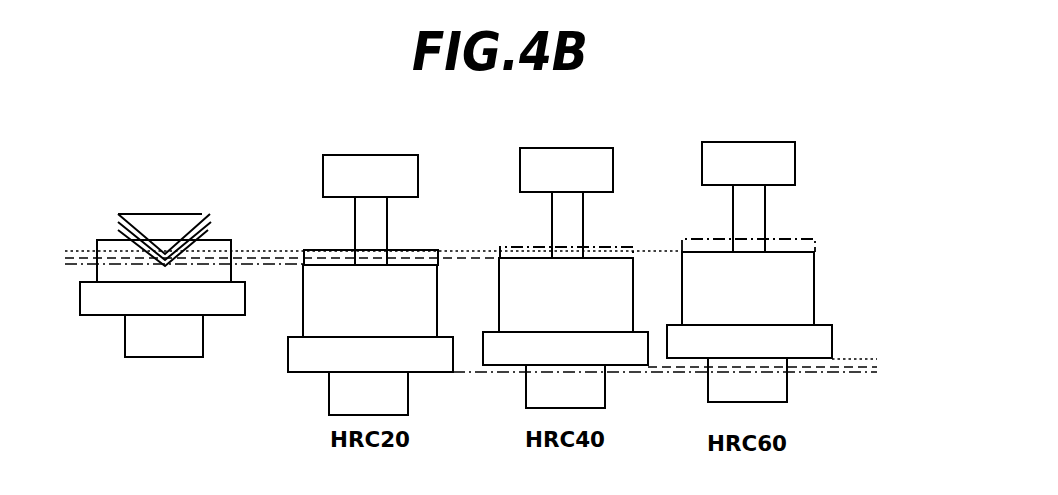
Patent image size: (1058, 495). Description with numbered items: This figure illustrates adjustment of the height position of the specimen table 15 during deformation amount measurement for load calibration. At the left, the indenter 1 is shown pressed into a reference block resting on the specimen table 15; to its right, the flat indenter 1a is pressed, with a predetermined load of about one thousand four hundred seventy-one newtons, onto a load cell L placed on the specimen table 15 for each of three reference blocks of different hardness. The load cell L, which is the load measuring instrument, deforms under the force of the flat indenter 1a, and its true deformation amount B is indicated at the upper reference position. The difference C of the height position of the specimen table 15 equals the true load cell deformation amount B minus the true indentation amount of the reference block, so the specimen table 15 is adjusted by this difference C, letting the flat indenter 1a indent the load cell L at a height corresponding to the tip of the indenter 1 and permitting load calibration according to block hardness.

The indenter 1 is at (202, 215).
The flat indenter 1a is at (383, 223).
The specimen table 15 is at (223, 305).
The load cell L is at (303, 310).
The true deformation amount of the load cell B is at (817, 232).
The difference of height position of the specimen table C is at (882, 356).